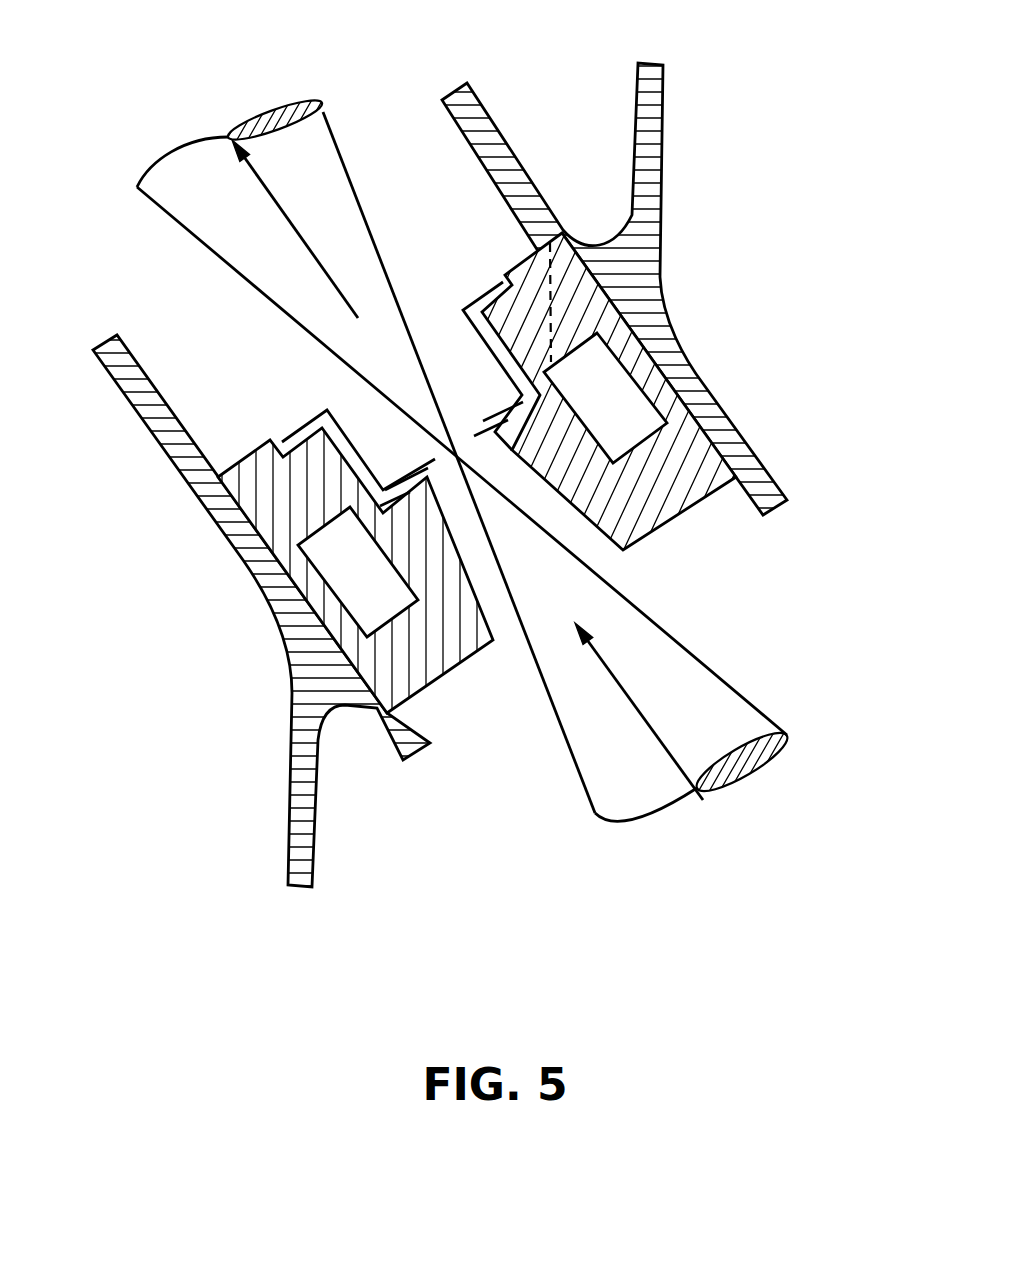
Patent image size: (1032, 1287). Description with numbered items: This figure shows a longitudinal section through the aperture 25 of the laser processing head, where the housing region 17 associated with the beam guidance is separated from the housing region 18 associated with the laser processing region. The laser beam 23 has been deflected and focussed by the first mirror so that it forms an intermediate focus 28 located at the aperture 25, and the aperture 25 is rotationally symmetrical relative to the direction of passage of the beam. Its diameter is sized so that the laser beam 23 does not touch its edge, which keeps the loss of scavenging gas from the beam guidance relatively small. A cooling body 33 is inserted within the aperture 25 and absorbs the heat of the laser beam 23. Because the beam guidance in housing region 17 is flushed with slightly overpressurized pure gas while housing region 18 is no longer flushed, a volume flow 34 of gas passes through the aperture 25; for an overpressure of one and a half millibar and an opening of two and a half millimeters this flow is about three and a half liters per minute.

The housing region 17 is at (468, 703).
The housing region 18 is at (225, 362).
The laser beam 23 is at (662, 678).
The aperture 25 is at (462, 451).
The intermediate focus 28 is at (465, 449).
The cooling body 33 is at (462, 310).
The volume flow 34 is at (647, 723).